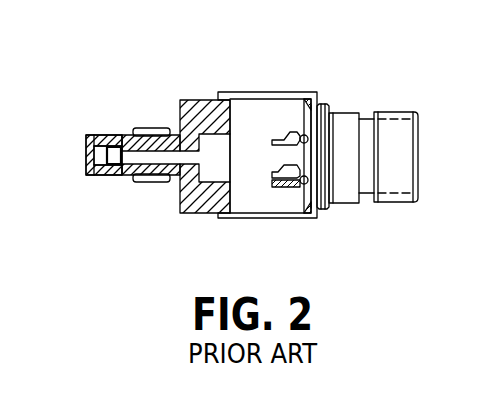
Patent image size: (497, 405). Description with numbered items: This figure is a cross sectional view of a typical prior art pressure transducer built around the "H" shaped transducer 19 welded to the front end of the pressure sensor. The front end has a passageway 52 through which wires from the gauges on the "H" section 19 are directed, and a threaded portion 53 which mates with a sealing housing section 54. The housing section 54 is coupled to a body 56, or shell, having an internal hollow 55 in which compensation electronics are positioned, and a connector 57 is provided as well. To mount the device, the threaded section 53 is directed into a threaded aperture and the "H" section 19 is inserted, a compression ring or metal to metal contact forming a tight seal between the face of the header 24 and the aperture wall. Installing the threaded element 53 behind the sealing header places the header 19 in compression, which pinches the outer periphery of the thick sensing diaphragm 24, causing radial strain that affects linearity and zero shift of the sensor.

The "H" shaped transducer 19 is at (104, 177).
The sensing diaphragm 24 is at (97, 157).
The passageway 52 is at (153, 153).
The threaded portion 53 is at (149, 147).
The sealing housing section 54 is at (203, 100).
The internal hollow 55 is at (248, 177).
The body 56 is at (264, 92).
The connector 57 is at (343, 110).